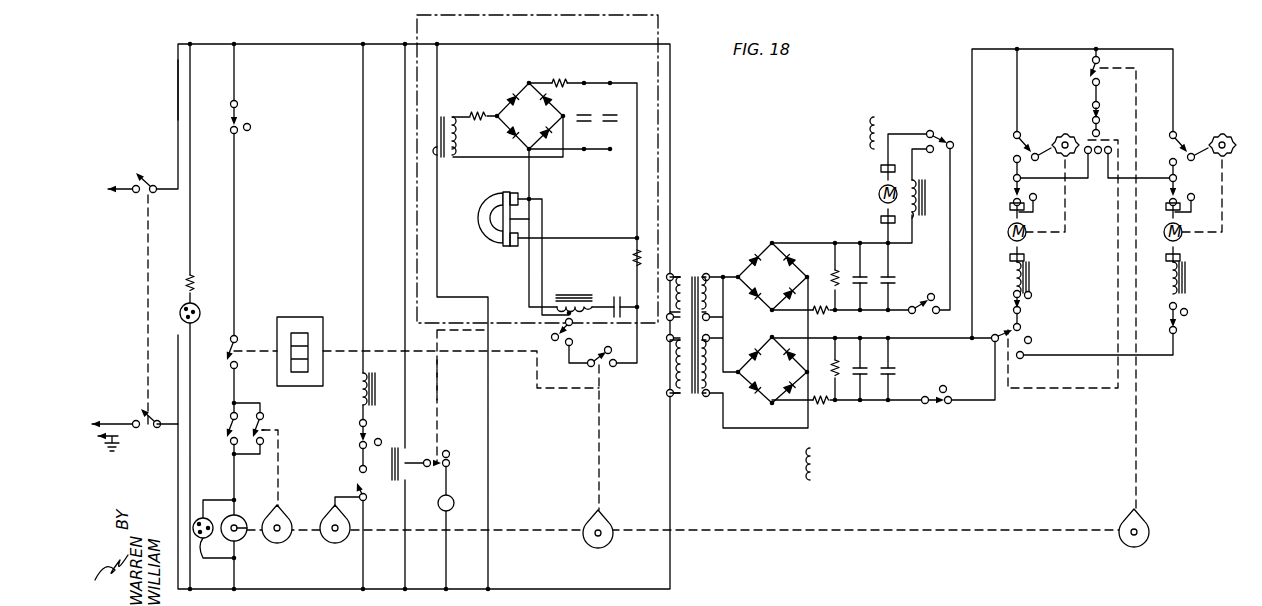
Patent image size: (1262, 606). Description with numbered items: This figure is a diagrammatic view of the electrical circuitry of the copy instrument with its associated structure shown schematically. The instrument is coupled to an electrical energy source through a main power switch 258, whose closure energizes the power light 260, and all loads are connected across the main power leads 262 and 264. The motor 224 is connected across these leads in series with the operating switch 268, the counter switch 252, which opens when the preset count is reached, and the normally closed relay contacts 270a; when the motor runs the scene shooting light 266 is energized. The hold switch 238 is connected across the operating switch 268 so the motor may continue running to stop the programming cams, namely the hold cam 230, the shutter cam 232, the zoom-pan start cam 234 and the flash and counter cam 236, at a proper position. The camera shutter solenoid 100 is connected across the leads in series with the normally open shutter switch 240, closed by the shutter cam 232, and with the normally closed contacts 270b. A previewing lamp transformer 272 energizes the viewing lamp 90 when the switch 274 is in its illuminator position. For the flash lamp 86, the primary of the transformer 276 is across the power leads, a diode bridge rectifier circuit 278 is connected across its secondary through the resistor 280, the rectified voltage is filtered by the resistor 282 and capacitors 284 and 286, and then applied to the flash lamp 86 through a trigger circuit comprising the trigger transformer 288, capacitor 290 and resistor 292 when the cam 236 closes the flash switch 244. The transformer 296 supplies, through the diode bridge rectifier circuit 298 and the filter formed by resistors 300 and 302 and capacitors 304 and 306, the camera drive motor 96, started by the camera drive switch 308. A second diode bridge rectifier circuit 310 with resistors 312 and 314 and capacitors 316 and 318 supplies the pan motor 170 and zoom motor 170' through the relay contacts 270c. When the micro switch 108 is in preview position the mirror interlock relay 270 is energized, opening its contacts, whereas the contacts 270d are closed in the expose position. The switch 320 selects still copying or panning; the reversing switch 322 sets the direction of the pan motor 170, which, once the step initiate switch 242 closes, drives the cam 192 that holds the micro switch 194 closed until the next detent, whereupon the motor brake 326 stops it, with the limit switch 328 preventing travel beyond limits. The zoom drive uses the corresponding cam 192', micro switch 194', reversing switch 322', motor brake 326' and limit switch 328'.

The main power lead 262 is at (178, 93).
The relay contacts 270a is at (240, 118).
The main power switch 258 is at (146, 212).
The power light 260 is at (180, 313).
The counter switch 252 is at (230, 354).
The operating switch 268 is at (230, 418).
The hold switch 238 is at (264, 429).
The main power lead 264 is at (178, 473).
The scene shooting light 266 is at (198, 540).
The motor 224 is at (241, 542).
The hold cam 230 is at (284, 545).
The shutter cam 232 is at (337, 545).
The shutter switch 240 is at (354, 485).
The camera shutter solenoid 100 is at (388, 375).
The relay contacts 270b is at (386, 434).
The previewing lamp transformer 272 is at (400, 480).
The viewing lamp 90 is at (454, 504).
The switch 274 is at (438, 373).
The flash and counter cam 236 is at (610, 529).
The zoom-pan start cam 234 is at (1125, 526).
The transformer 276 is at (448, 116).
The diode bridge rectifier circuit 278 is at (524, 86).
The resistor 280 is at (474, 121).
The resistor 282 is at (561, 80).
The capacitor 284 is at (586, 113).
The capacitor 286 is at (613, 123).
The flash lamp 86 is at (488, 242).
The trigger transformer 288 is at (566, 296).
The capacitor 290 is at (614, 303).
The resistor 292 is at (635, 258).
The flash switch 244 is at (604, 357).
The transformer 296 is at (690, 275).
The diode bridge rectifier circuit 298 is at (755, 255).
The resistor 300 is at (818, 300).
The resistor 302 is at (834, 265).
The capacitor 304 is at (858, 274).
The capacitor 306 is at (886, 274).
The camera drive switch 308 is at (919, 303).
The diode bridge rectifier circuit 310 is at (762, 398).
The resistor 312 is at (822, 406).
The resistor 314 is at (840, 375).
The capacitor 316 is at (868, 369).
The capacitor 318 is at (893, 372).
The relay contacts 270c is at (930, 408).
The camera drive motor 96 is at (879, 190).
The micro switch 108 is at (940, 138).
The mirror interlock relay 270 is at (927, 213).
The step initiate switch 242 is at (1090, 70).
The relay contacts 270d is at (1115, 114).
The micro switch 194' is at (1036, 135).
The cam 192' is at (1054, 159).
The reversing switch 322' is at (1006, 190).
The zoom motor 170' is at (1002, 236).
The motor brake 326' is at (1050, 279).
The limit switch 328' is at (1043, 325).
The switch 320 is at (1002, 336).
The micro switch 194 is at (1190, 141).
The cam 192 is at (1235, 163).
The reversing switch 322 is at (1191, 190).
The pan motor 170 is at (1199, 236).
The motor brake 326 is at (1201, 284).
The limit switch 328 is at (1197, 327).